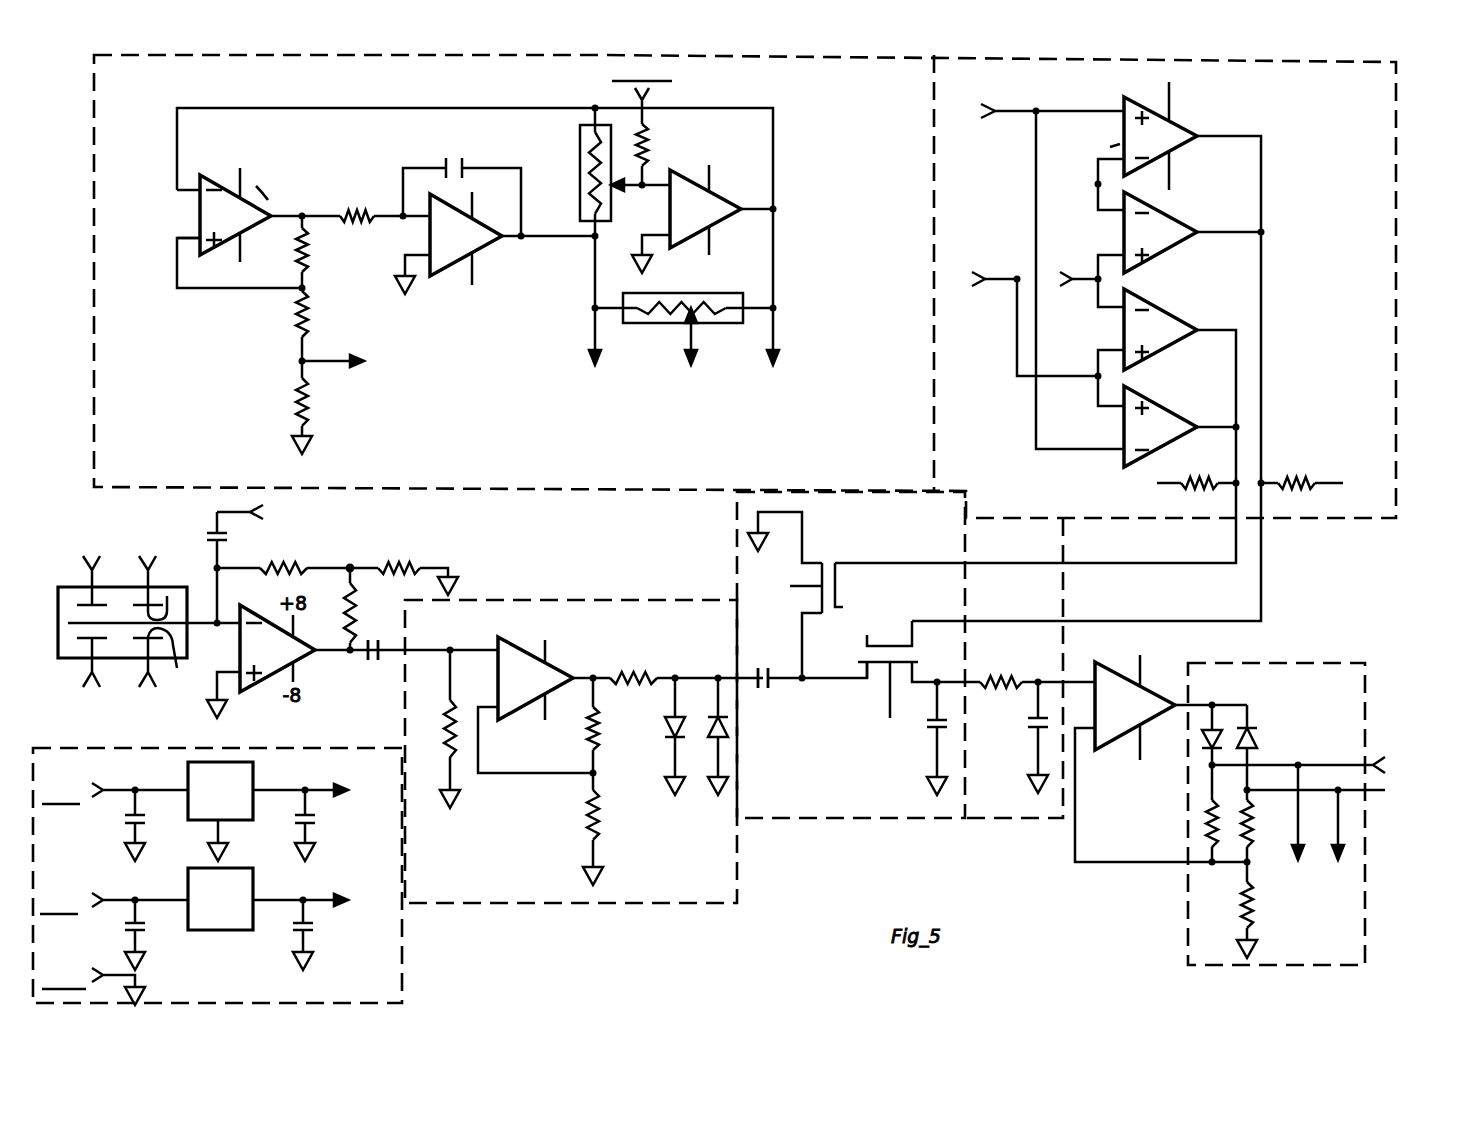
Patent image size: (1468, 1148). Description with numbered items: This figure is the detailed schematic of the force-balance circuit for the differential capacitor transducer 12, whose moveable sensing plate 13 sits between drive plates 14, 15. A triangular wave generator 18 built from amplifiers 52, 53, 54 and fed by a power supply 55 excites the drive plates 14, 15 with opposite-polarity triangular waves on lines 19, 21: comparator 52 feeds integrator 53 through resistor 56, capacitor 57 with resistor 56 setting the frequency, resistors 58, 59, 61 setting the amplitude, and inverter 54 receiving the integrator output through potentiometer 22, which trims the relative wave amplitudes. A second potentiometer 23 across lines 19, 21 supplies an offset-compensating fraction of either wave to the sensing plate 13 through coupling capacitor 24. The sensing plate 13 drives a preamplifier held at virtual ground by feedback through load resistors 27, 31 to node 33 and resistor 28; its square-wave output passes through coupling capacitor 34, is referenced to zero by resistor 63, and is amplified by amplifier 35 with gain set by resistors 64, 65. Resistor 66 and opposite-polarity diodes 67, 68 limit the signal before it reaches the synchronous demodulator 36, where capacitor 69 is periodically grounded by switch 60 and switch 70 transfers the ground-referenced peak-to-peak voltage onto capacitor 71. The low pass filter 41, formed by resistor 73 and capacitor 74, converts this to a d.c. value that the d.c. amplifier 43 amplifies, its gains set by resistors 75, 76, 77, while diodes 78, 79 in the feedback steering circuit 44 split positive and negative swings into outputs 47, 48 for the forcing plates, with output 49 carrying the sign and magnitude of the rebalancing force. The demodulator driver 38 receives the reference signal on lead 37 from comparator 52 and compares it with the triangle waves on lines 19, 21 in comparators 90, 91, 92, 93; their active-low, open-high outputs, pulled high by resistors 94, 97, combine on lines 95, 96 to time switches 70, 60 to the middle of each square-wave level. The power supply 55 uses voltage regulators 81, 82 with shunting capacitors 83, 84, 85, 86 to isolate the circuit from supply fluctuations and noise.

The transducer 12 is at (60, 618).
The moveable sensing plate 13 is at (124, 626).
The drive plate 14 is at (170, 657).
The drive plate 15 is at (167, 589).
The triangular wave generator 18 is at (586, 496).
The output line 19 is at (470, 108).
The output line 21 is at (593, 292).
The potentiometer 22 is at (576, 187).
The potentiometer 23 is at (662, 336).
The coupling capacitor 24 is at (209, 536).
The resistor 27 is at (346, 604).
The resistor 28 is at (282, 568).
The resistor 31 is at (410, 568).
The node 33 is at (350, 566).
The coupling capacitor 34 is at (349, 661).
The second amplifier 35 is at (504, 692).
The synchronous demodulator 36 is at (830, 820).
The reference signal lead 37 is at (308, 361).
The demodulator driver 38 is at (1339, 521).
The low pass filter 41 is at (1027, 820).
The d.c. amplifier 43 is at (1109, 721).
The feedback steering circuit 44 is at (1188, 925).
The output 47 is at (82, 578).
The output 48 is at (84, 667).
The output 49 is at (1375, 766).
The amplifier 52 is at (198, 214).
The amplifier 53 is at (440, 247).
The inverter 54 is at (679, 221).
The power supply 55 is at (402, 968).
The resistor 56 is at (366, 222).
The capacitor 57 is at (464, 170).
The resistor 58 is at (298, 242).
The resistor 59 is at (298, 320).
The switch 60 is at (828, 556).
The resistor 61 is at (298, 402).
The resistor 63 is at (448, 752).
The resistor 64 is at (590, 722).
The resistor 65 is at (598, 828).
The resistor 66 is at (612, 672).
The diode 67 is at (668, 725).
The diode 68 is at (718, 727).
The capacitor 69 is at (768, 692).
The switch 70 is at (858, 656).
The capacitor 71 is at (928, 722).
The resistor 73 is at (1022, 682).
The capacitor 74 is at (1030, 724).
The resistor 75 is at (1205, 838).
The resistor 76 is at (1245, 915).
The resistor 77 is at (1258, 832).
The diode 78 is at (1218, 716).
The diode 79 is at (1258, 733).
The voltage regulator 81 is at (256, 794).
The voltage regulator 82 is at (188, 870).
The shunting capacitor 83 is at (132, 812).
The shunting capacitor 84 is at (298, 822).
The shunting capacitor 85 is at (137, 920).
The shunting capacitor 86 is at (300, 920).
The comparator 90 is at (1185, 136).
The comparator 91 is at (1190, 232).
The comparator 92 is at (1188, 330).
The comparator 93 is at (1186, 422).
The resistor 94 is at (1288, 487).
The comparator output line 95 is at (1263, 292).
The comparator output line 96 is at (1236, 362).
The resistor 97 is at (1186, 487).